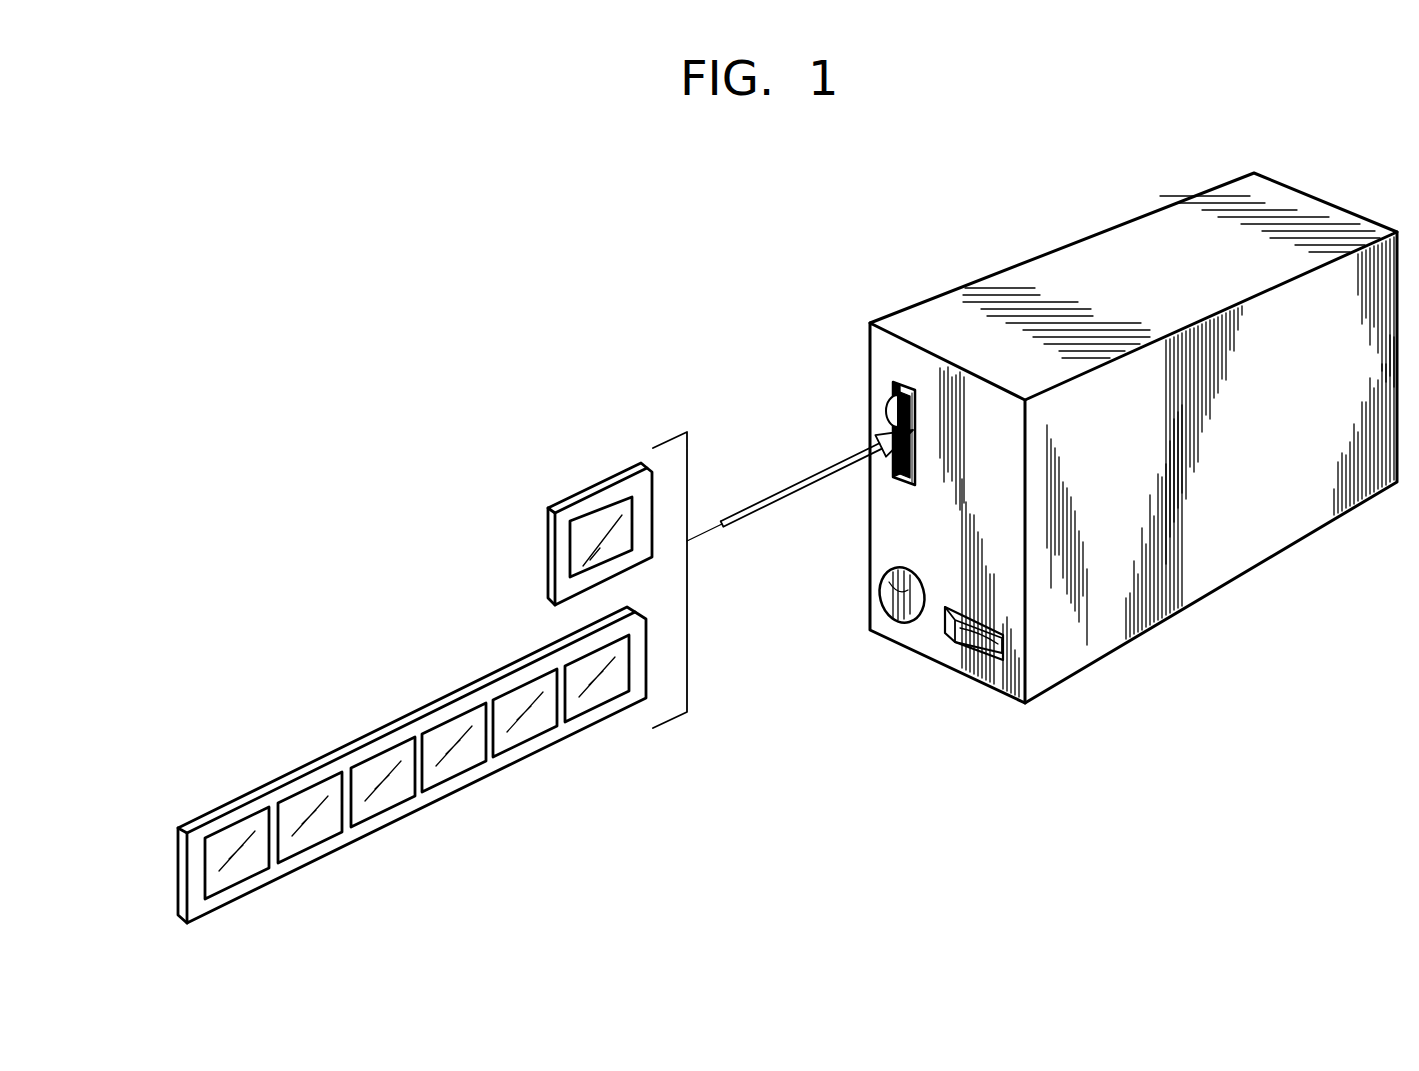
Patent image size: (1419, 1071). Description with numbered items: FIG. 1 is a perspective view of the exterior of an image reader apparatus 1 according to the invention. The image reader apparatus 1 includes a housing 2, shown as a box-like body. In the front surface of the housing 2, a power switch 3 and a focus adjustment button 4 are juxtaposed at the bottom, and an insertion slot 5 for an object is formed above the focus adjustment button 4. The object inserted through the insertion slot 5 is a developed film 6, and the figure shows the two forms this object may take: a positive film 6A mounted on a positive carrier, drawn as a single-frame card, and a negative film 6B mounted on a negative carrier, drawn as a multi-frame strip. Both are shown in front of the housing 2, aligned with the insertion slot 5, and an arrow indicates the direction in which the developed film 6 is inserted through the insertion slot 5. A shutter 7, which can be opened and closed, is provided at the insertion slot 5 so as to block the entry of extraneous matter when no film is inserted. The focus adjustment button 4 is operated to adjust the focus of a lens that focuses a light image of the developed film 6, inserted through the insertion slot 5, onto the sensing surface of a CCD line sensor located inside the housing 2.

The image reader apparatus 1 is at (1209, 173).
The housing 2 is at (1045, 280).
The power switch 3 is at (962, 643).
The focus adjustment button 4 is at (897, 590).
The insertion slot 5 is at (910, 485).
The developed film 6 is at (546, 400).
The positive film 6A is at (580, 492).
The negative film 6B is at (504, 670).
The shutter 7 is at (891, 410).